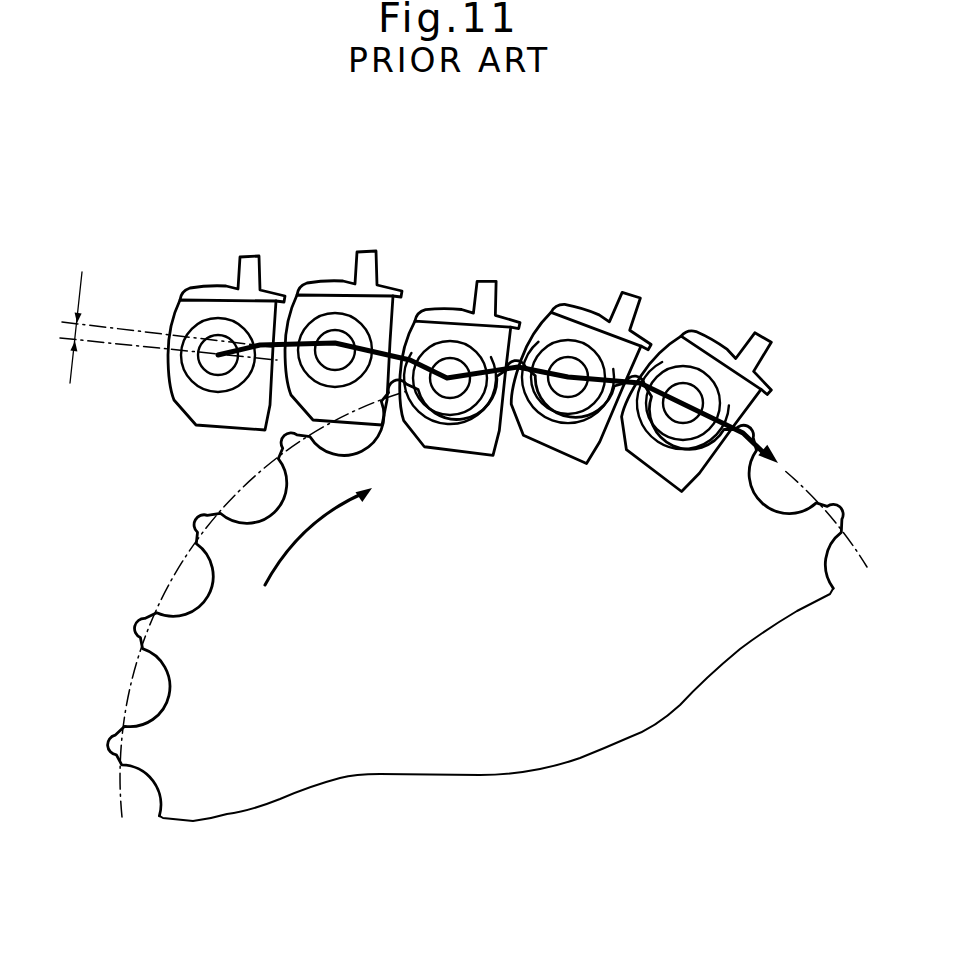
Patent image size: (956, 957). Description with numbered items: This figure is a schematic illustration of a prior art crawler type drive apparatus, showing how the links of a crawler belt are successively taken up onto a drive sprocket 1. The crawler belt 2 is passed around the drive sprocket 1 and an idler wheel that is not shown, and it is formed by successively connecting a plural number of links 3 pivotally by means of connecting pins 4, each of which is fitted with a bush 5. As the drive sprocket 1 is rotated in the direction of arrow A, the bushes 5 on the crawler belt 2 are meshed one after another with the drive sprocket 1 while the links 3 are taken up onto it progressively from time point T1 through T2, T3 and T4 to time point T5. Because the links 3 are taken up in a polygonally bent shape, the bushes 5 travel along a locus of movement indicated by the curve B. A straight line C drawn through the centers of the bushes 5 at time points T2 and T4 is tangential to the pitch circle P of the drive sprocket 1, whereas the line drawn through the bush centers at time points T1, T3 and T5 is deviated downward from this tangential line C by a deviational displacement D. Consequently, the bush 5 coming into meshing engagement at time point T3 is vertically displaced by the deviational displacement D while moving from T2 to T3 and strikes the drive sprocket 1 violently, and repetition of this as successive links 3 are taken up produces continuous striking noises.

The drive sprocket 1 is at (458, 591).
The crawler belt 2 is at (477, 321).
The link 3 is at (200, 413).
The connecting pin 4 is at (206, 362).
The bush 5 is at (233, 327).
The time point T1 is at (250, 248).
The time point T2 is at (368, 242).
The time point T3 is at (482, 272).
The time point T4 is at (627, 281).
The time point T5 is at (767, 325).
The pitch circle P is at (124, 680).
The arrow A is at (331, 527).
The curve B is at (746, 452).
The straight line C is at (113, 317).
The deviational displacement D is at (61, 325).